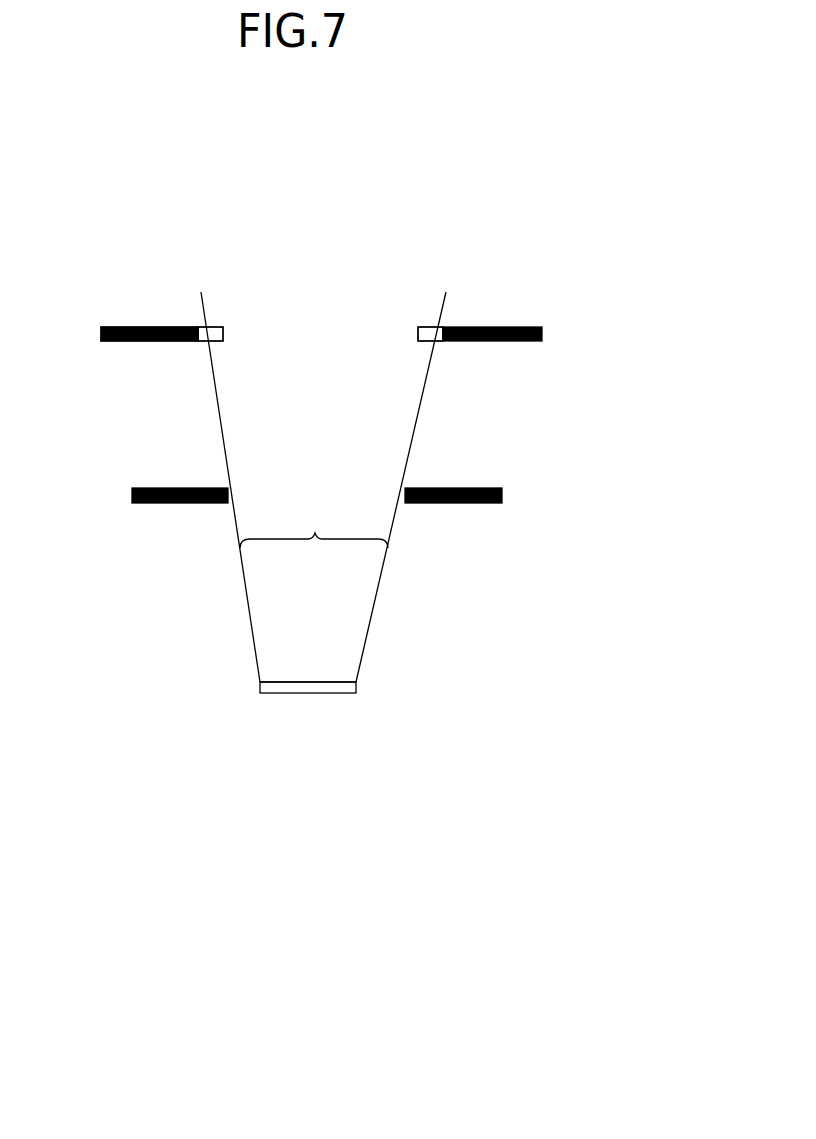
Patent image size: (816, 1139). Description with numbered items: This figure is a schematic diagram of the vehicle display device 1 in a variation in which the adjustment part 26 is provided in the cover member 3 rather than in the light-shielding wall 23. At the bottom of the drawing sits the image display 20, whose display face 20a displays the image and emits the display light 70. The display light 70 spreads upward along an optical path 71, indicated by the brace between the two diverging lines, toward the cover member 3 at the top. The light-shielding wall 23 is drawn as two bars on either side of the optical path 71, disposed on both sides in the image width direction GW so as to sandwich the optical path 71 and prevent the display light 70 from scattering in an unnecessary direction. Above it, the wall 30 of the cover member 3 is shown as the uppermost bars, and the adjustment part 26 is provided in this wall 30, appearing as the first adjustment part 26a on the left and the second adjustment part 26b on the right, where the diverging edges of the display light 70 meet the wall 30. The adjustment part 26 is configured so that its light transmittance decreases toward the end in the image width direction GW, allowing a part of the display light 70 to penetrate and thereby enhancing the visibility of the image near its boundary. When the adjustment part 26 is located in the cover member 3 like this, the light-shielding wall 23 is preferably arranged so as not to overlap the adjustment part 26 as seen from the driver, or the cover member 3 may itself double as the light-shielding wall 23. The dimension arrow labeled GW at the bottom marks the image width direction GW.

The vehicle display device 1 is at (108, 187).
The cover member 3 is at (112, 327).
The image display 20 is at (320, 694).
The display face 20a is at (275, 681).
The light-shielding wall 23 is at (158, 485).
The adjustment part 26 is at (320, 334).
The first adjustment part 26a is at (213, 327).
The second adjustment part 26b is at (430, 327).
The wall 30 is at (138, 323).
The display light 70 is at (383, 612).
The optical path 71 is at (315, 525).
The image width direction GW is at (431, 823).